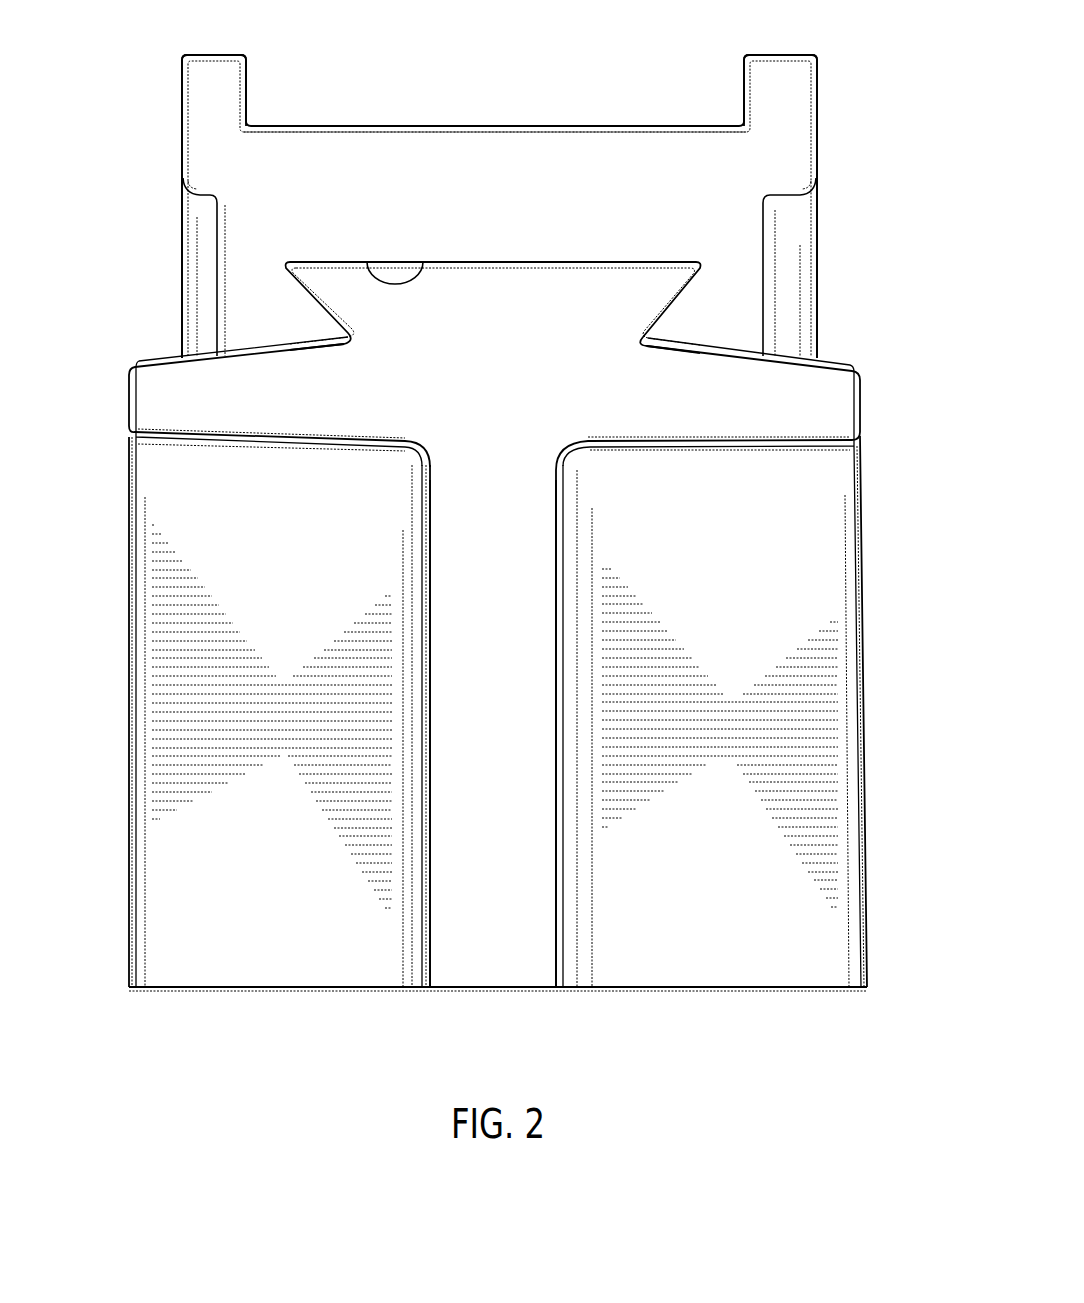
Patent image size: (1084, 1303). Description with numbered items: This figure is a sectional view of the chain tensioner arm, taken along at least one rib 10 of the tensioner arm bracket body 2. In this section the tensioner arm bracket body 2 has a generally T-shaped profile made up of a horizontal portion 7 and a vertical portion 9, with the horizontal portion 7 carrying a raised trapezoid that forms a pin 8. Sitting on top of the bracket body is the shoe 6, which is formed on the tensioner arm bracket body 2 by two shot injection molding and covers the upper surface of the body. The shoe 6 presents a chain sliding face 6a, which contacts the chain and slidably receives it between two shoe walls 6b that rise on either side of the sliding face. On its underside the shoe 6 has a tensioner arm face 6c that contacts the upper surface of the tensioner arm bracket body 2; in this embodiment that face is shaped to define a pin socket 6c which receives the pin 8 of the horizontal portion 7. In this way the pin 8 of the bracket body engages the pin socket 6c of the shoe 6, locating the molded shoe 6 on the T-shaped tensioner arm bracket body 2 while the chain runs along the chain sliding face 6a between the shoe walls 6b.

The tensioner arm bracket body 2 is at (783, 733).
The shoe 6 is at (486, 179).
The chain sliding face 6a is at (410, 126).
The shoe walls 6b is at (210, 53).
The tensioner arm face / pin socket 6c is at (377, 283).
The horizontal portion 7 is at (210, 424).
The pin 8 is at (493, 205).
The vertical portion 9 is at (481, 880).
The rib 10 is at (512, 988).